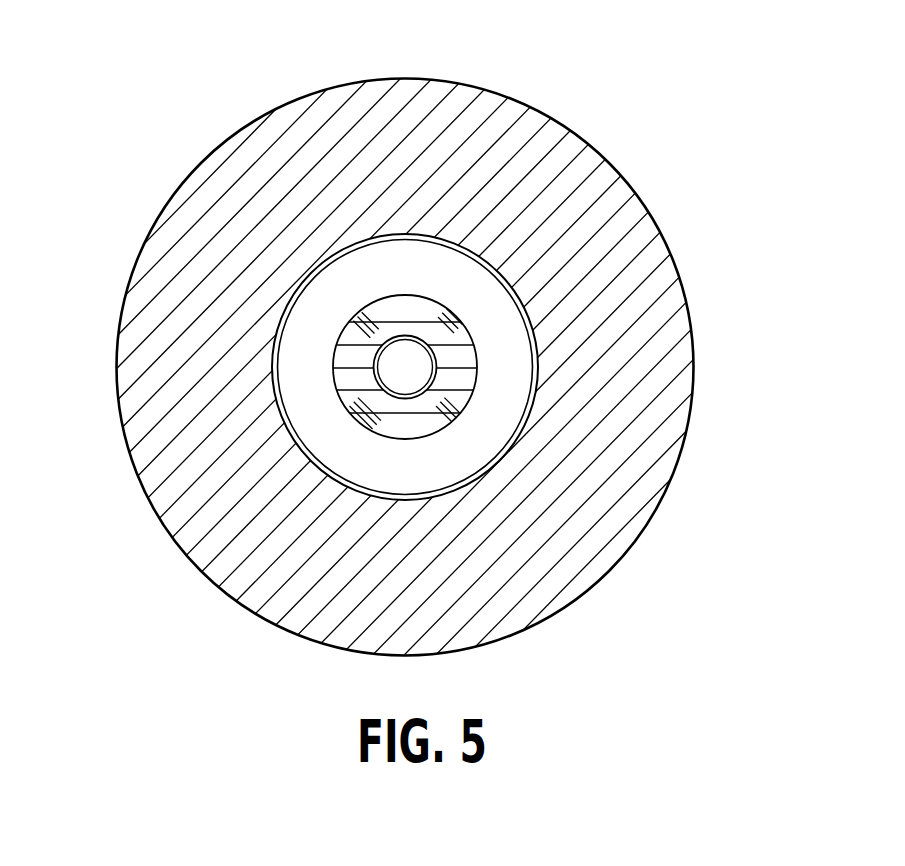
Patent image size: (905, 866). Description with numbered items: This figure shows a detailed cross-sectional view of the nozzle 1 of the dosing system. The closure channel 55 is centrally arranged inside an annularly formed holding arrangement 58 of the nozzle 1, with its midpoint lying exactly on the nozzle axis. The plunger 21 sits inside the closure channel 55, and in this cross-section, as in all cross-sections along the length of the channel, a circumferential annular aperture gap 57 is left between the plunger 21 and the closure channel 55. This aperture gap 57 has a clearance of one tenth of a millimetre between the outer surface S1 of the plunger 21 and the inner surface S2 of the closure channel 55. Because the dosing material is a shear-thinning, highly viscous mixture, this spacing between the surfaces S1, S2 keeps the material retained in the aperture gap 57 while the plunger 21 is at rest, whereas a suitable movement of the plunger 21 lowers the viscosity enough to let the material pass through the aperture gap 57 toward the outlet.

The nozzle 1 is at (138, 622).
The plunger 21 is at (417, 367).
The closure channel 55 is at (445, 380).
The aperture gap 57 is at (405, 400).
The holding arrangement 58 is at (623, 227).
The outer surface of the plunger S1 is at (425, 332).
The inner surface of the closure channel S2 is at (407, 342).